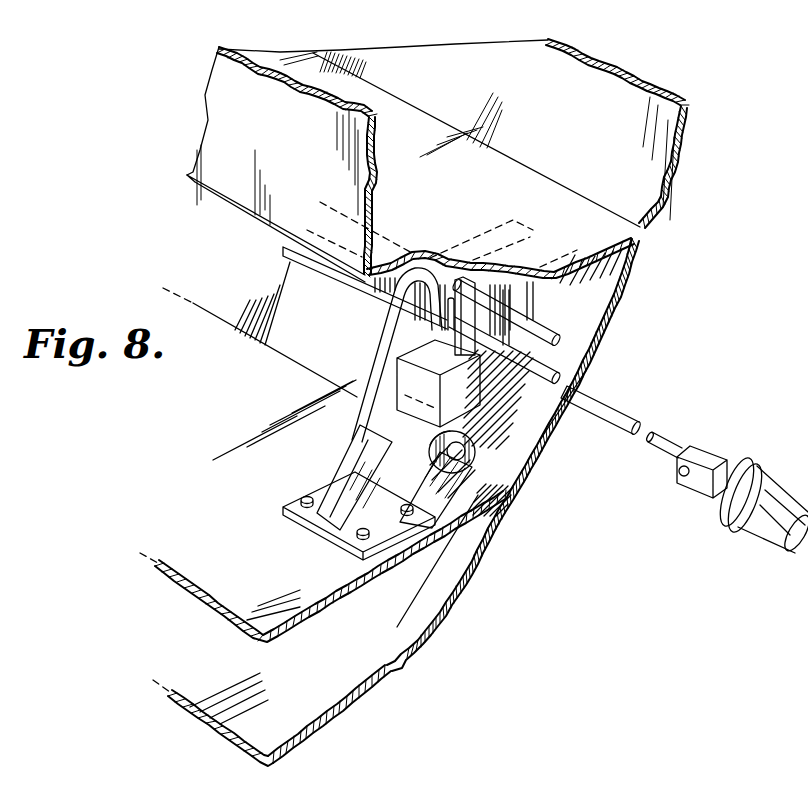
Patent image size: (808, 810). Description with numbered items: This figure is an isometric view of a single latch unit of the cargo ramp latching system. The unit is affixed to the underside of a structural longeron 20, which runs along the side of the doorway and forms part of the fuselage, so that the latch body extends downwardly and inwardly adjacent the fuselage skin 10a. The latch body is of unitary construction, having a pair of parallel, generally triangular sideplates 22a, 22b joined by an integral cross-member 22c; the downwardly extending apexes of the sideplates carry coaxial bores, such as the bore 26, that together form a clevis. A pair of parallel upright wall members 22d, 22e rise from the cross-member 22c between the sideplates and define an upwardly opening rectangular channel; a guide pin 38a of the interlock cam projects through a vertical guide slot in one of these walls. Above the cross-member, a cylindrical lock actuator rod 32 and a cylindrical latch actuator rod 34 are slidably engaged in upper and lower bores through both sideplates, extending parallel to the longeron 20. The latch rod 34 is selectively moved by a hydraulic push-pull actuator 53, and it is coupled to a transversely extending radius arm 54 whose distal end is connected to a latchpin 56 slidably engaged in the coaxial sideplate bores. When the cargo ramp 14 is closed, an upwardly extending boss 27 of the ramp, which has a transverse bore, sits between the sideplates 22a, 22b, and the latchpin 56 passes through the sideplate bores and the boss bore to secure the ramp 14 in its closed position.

The fuselage skin 10a is at (622, 300).
The cargo ramp 14 is at (373, 688).
The structural longeron 20 is at (213, 118).
The sideplate 22a is at (471, 250).
The sideplate 22b is at (517, 393).
The cross-member 22c is at (467, 387).
The upright wall member 22d is at (443, 332).
The upright wall member 22e is at (527, 277).
The coaxial bore 26 is at (490, 537).
The boss 27 is at (363, 507).
The lock actuator rod 32 is at (557, 332).
The latch actuator rod 34 is at (560, 368).
The guide pin 38a is at (450, 318).
The hydraulic push-pull actuator 53 is at (777, 487).
The radius arm 54 is at (368, 372).
The latchpin 56 is at (483, 432).